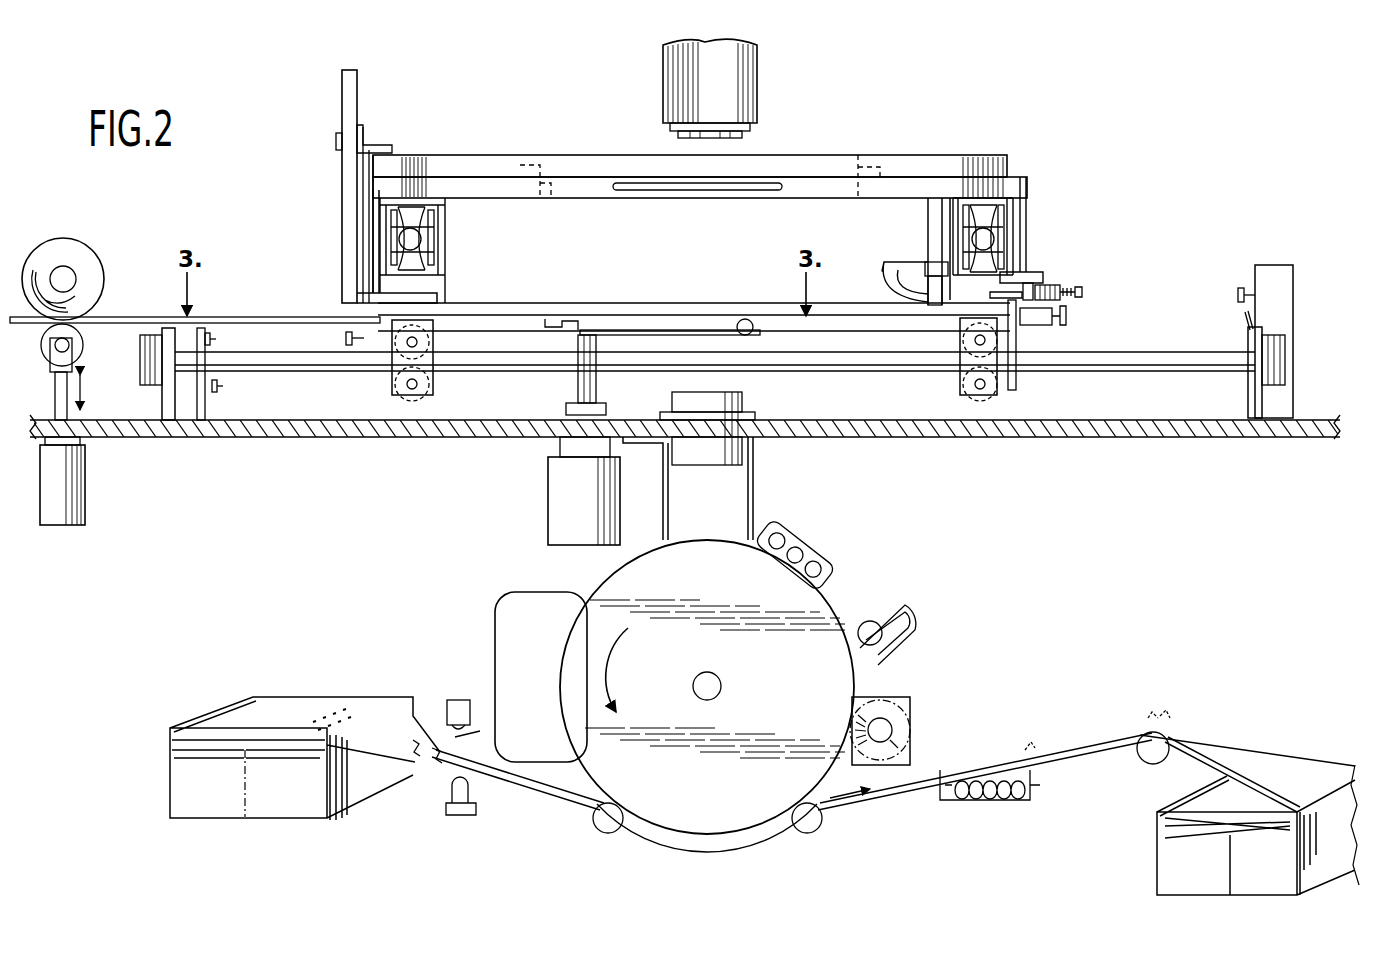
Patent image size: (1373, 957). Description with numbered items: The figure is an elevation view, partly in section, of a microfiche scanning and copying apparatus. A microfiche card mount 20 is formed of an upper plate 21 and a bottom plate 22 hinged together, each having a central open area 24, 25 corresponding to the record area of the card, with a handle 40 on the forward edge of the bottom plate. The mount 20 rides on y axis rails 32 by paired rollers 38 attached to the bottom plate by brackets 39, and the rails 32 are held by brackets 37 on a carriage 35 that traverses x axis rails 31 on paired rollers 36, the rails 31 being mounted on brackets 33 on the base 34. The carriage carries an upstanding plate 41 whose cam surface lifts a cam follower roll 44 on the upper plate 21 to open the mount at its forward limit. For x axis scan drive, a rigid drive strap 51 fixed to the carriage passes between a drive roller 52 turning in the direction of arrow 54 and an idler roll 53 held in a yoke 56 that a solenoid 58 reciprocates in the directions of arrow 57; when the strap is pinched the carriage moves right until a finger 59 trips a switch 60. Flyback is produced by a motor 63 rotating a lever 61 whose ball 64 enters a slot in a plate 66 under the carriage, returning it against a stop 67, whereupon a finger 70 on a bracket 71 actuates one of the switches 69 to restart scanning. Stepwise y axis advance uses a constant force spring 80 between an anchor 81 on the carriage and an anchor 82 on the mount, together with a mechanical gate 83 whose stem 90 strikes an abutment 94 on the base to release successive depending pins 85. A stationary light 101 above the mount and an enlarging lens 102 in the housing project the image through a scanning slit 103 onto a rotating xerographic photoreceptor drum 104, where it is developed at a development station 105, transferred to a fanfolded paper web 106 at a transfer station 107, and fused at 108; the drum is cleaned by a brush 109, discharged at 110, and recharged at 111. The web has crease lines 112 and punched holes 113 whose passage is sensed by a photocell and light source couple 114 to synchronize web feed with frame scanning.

The microfiche card mount 20 is at (856, 140).
The upper plate 21 is at (897, 166).
The bottom plate 22 is at (870, 185).
The open area 24 is at (545, 200).
The open area 25 is at (543, 160).
The rails 31 is at (1158, 365).
The rails 32 is at (413, 238).
The brackets 33 is at (165, 402).
The base 34 is at (996, 440).
The carriage 35 is at (870, 312).
The paired rollers 36 is at (434, 352).
The brackets 37 is at (430, 290).
The paired rollers 38 is at (415, 258).
The brackets 39 is at (432, 265).
The handle 40 is at (722, 192).
The upstanding plate 41 is at (345, 238).
The cam follower roll 44 is at (338, 146).
The rigid drive strap 51 is at (243, 300).
The drive roller 52 is at (86, 270).
The idler roll 53 is at (80, 343).
The arrow 54 is at (78, 300).
The yoke 56 is at (70, 368).
The arrow 57 is at (70, 393).
The solenoid 58 is at (70, 470).
The finger 59 is at (1066, 318).
The switch 60 is at (1246, 320).
The lever 61 is at (750, 333).
The motor 63 is at (560, 505).
The ball 64 is at (745, 320).
The plate 66 is at (548, 325).
The stop 67 is at (223, 388).
The switches 69 is at (214, 340).
The finger 70 is at (346, 338).
The bracket 71 is at (372, 275).
The constant force spring 80 is at (890, 275).
The anchor 81 is at (936, 307).
The anchor 82 is at (935, 215).
The mechanical gate 83 is at (1050, 283).
The pins 85 is at (990, 295).
The stem 90 is at (1065, 291).
The abutment 94 is at (1240, 293).
The stationary light 101 is at (745, 72).
The enlarging lens 102 is at (742, 400).
The scanning slit 103 is at (754, 480).
The xerographic photoreceptor drum 104 is at (820, 612).
The development station 105 is at (510, 592).
The paper web 106 is at (520, 790).
The transfer station 107 is at (712, 836).
The fusing station 108 is at (945, 800).
The brush 109 is at (907, 697).
The charge dissipation station 110 is at (906, 598).
The charging station 111 is at (822, 552).
The crease lines 112 is at (1035, 748).
The punched holes 113 is at (1155, 712).
The photocell and light source couple 114 is at (457, 700).